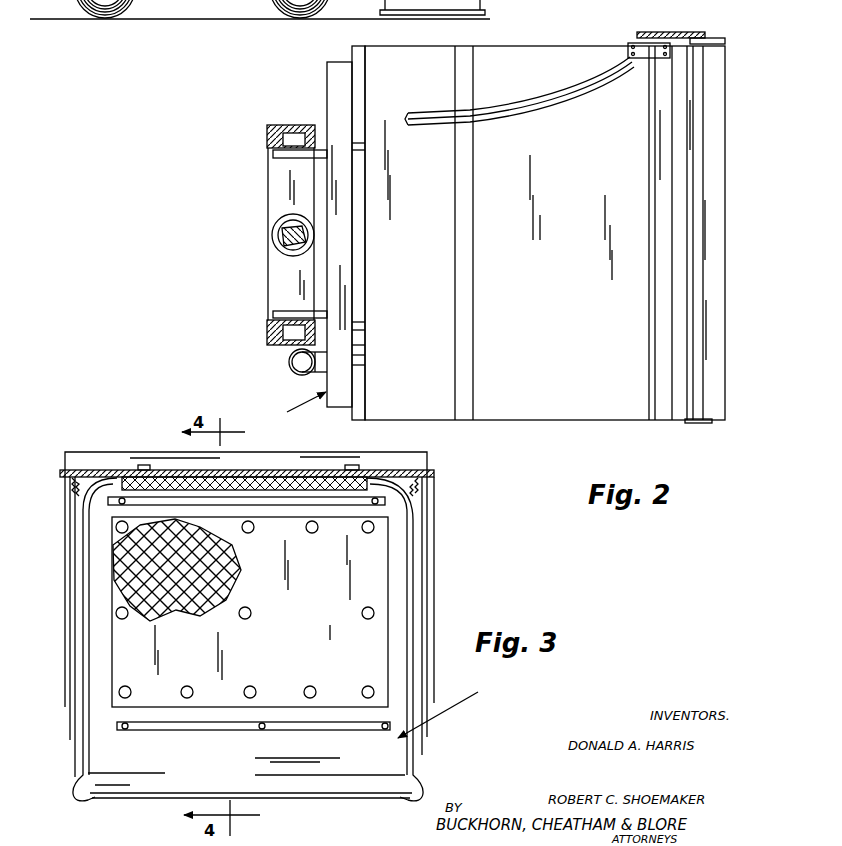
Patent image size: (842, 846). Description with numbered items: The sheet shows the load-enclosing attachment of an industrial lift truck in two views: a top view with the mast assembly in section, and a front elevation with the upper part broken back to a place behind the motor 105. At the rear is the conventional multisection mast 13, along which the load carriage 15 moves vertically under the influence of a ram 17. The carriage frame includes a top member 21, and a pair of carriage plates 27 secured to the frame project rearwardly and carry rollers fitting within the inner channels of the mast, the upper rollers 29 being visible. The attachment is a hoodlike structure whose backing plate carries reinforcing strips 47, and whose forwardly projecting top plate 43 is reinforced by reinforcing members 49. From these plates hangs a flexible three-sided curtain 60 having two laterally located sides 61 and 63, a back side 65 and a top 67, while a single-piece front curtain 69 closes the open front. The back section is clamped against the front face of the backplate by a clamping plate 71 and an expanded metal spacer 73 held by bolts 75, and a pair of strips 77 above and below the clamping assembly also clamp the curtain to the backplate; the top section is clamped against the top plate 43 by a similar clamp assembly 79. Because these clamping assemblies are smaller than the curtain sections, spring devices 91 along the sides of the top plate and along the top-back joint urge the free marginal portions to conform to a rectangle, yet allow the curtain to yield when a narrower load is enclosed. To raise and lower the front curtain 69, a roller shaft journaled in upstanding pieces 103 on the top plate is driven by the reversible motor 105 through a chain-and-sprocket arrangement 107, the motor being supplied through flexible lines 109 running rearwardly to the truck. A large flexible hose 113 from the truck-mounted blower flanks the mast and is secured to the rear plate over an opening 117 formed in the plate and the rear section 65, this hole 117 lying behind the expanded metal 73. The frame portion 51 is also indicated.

In FIG. 2, the multisection mast 13 is at (289, 125).
In FIG. 2, the load carriage 15 is at (294, 408).
In FIG. 2, the ram 17 is at (279, 249).
In FIG. 2, the top member 21 is at (337, 100).
In FIG. 2, the carriage plates 27 is at (300, 153).
In FIG. 2, the upper rollers 29 is at (270, 148).
In FIG. 2, the top plate 43 is at (570, 395).
In FIG. 3, the top plate 43 is at (340, 472).
In FIG. 2, the reinforcing strips 47 is at (362, 60).
In FIG. 2, the reinforcing members 49 is at (468, 365).
In FIG. 3, the reinforcing members 49 is at (420, 462).
In FIG. 3, the outer frame 51 is at (66, 608).
In FIG. 3, the three-sided curtain 60 is at (450, 709).
In FIG. 3, the side of the three-sided curtain 61 is at (80, 755).
In FIG. 3, the side of the three-sided curtain 63 is at (420, 752).
In FIG. 3, the back side of the three-sided curtain 65 is at (187, 775).
In FIG. 3, the top of the three-sided curtain 67 is at (160, 470).
In FIG. 2, the front curtain 69 is at (715, 231).
In FIG. 3, the clamping plate 71 is at (165, 695).
In FIG. 3, the expanded metal spacer 73 is at (155, 600).
In FIG. 3, the bolts 75 is at (252, 613).
In FIG. 3, the strips 77 is at (357, 500).
In FIG. 3, the clamp assembly 79 is at (292, 491).
In FIG. 3, the spring devices 91 is at (70, 485).
In FIG. 2, the upstanding pieces 103 is at (703, 40).
In FIG. 2, the reversible motor 105 is at (650, 50).
In FIG. 2, the chain-and-sprocket arrangement 107 is at (668, 33).
In FIG. 2, the flexible lines 109 is at (536, 102).
In FIG. 2, the flexible hose 113 is at (318, 374).
In FIG. 3, the opening 117 is at (115, 552).